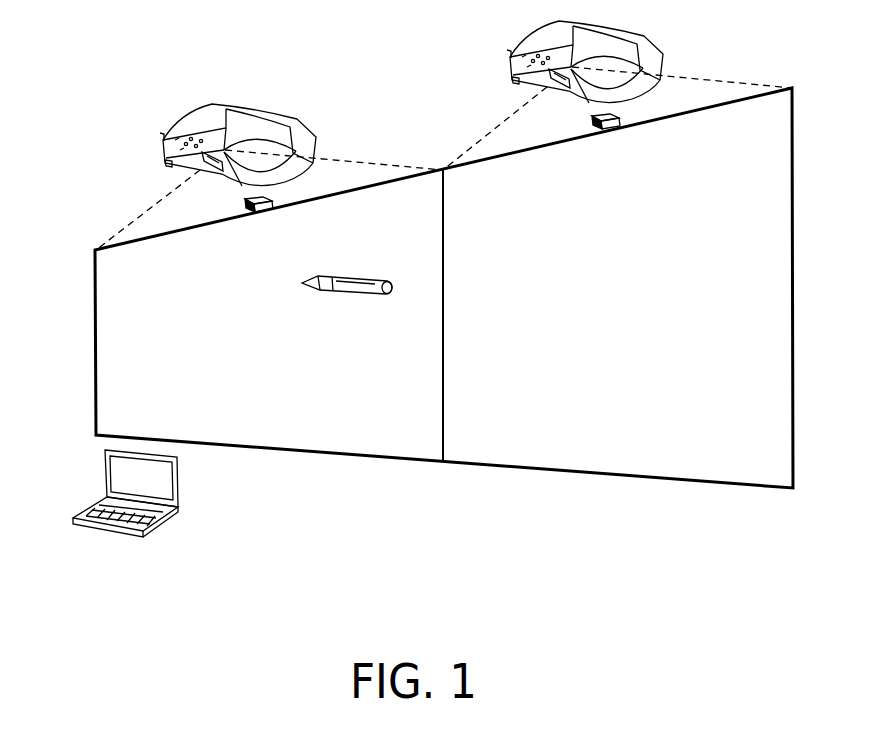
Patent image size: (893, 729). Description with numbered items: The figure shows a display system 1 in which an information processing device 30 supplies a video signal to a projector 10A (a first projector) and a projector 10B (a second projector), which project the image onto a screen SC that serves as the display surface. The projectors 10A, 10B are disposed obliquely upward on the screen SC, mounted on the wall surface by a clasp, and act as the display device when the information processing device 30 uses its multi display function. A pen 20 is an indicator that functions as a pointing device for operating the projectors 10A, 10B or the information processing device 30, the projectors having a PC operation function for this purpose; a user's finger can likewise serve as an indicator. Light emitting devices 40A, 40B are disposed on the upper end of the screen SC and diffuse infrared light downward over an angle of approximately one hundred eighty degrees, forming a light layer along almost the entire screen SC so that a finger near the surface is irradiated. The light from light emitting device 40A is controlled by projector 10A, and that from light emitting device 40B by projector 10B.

The display system 1 is at (132, 141).
The projector (first projector) 10A is at (278, 91).
The projector (second projector) 10B is at (507, 70).
The light emitting device 40A is at (243, 206).
The light emitting device 40B is at (588, 123).
The pen 20 is at (352, 276).
The information processing device 30 is at (108, 505).
The screen SC is at (96, 322).